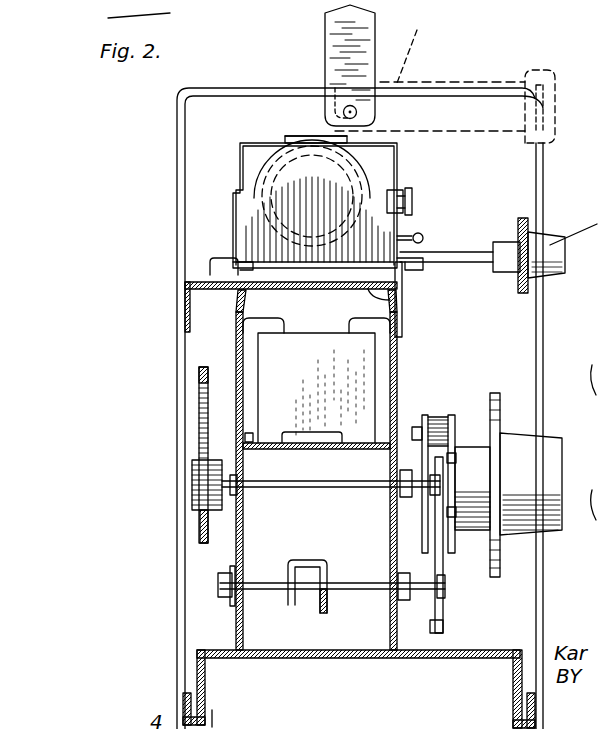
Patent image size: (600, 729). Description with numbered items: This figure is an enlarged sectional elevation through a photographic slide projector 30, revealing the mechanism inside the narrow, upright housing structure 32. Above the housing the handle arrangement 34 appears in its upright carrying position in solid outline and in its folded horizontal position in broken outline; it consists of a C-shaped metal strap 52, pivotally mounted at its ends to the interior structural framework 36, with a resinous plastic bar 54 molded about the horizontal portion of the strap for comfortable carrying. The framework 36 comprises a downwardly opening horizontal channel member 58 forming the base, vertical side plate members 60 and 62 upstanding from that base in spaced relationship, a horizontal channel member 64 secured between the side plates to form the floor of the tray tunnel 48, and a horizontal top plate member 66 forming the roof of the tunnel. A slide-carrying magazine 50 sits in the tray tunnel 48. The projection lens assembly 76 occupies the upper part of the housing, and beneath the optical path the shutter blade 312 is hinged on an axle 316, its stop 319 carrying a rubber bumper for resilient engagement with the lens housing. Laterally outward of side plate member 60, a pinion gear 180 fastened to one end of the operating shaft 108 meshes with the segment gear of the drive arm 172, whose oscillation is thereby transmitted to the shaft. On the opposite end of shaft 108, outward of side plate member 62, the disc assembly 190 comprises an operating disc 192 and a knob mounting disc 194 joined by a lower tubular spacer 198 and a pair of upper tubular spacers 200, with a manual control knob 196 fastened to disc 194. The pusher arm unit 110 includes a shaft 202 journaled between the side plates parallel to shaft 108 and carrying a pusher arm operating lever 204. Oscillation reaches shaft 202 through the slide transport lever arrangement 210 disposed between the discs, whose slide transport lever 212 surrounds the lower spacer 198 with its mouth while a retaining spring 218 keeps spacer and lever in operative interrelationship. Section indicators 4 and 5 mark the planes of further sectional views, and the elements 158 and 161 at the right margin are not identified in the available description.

The photographic slide projector 30 is at (475, 70).
The housing structure 32 is at (172, 170).
The handle arrangement 34 is at (323, 52).
The interior structural framework 36 is at (213, 647).
The tray tunnel 48 is at (288, 299).
The slide-carrying tray or magazine 50 is at (336, 374).
The metal strap 52 is at (362, 42).
The resinous plastic bar 54 is at (541, 70).
The horizontal channel member 58 is at (476, 653).
The vertical side plate member 60 is at (243, 554).
The vertical side plate member 62 is at (390, 528).
The horizontal channel member 64 is at (269, 450).
The horizontal top plate member 66 is at (402, 300).
The projection lens assembly 76 is at (402, 173).
The operating shaft 108 is at (301, 489).
The pusher arm unit 110 is at (308, 633).
The element 158 is at (592, 481).
The element 161 is at (590, 353).
The drive arm 172 is at (199, 388).
The pinion gear 180 is at (191, 474).
The disc assembly 190 is at (433, 413).
The operating disc 192 is at (412, 428).
The knob mounting disc 194 is at (462, 428).
The manual control knob 196 is at (565, 531).
The lower tubular spacer 198 is at (453, 555).
The upper tubular spacers 200 is at (446, 421).
The shaft 202 is at (268, 592).
The pusher arm operating lever 204 is at (330, 608).
The slide transport lever arrangement 210 is at (422, 625).
The slide transport lever 212 is at (443, 487).
The retaining spring 218 is at (440, 627).
The shutter blade 312 is at (255, 230).
The axle 316 is at (420, 267).
The stop 319 is at (414, 201).
The section line 4- 4 is at (214, 130).
The section line 5- 5 is at (432, 117).